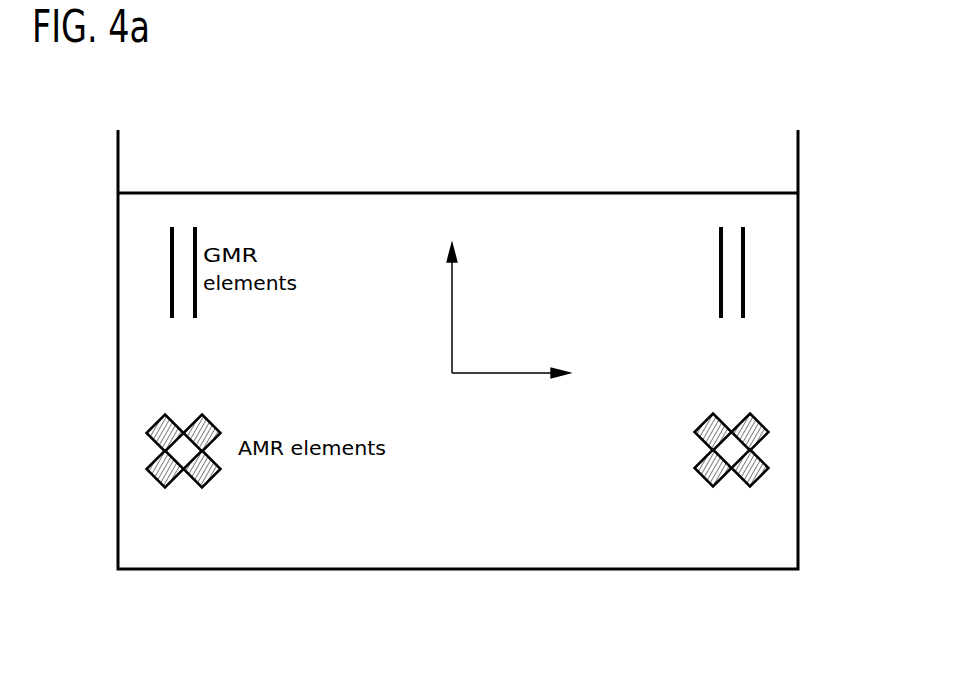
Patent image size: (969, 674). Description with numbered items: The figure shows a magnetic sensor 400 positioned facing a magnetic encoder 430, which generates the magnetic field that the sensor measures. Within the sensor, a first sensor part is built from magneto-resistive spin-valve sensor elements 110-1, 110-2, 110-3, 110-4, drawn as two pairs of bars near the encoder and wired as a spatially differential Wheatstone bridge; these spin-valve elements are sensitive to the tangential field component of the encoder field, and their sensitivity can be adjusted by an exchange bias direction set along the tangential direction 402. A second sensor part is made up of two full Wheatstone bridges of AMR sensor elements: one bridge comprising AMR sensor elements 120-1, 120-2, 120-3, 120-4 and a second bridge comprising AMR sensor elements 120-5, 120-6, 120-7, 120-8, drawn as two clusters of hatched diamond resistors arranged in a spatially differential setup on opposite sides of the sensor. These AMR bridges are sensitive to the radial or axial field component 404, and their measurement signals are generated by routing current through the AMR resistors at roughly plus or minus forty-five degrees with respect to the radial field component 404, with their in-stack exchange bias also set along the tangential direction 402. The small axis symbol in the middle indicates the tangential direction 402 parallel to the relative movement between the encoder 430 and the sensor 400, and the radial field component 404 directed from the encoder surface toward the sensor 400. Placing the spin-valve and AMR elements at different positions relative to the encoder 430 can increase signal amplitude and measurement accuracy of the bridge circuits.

The magnetic sensor 400 is at (168, 588).
The magnetic encoder 430 is at (640, 116).
The magneto-resistive spin-valve sensor element 110-1 is at (170, 270).
The magneto-resistive spin-valve sensor element 110-2 is at (719, 270).
The magneto-resistive spin-valve sensor element 110-3 is at (745, 268).
The magneto-resistive spin-valve sensor element 110-4 is at (197, 237).
The AMR sensor element 120-1 is at (152, 418).
The AMR sensor element 120-2 is at (152, 484).
The AMR sensor element 120-3 is at (210, 420).
The AMR sensor element 120-4 is at (210, 484).
The AMR sensor element 120-5 is at (700, 420).
The AMR sensor element 120-6 is at (700, 482).
The AMR sensor element 120-7 is at (763, 418).
The AMR sensor element 120-8 is at (765, 483).
The tangential direction 402 is at (500, 372).
The radial field component 404 is at (453, 274).